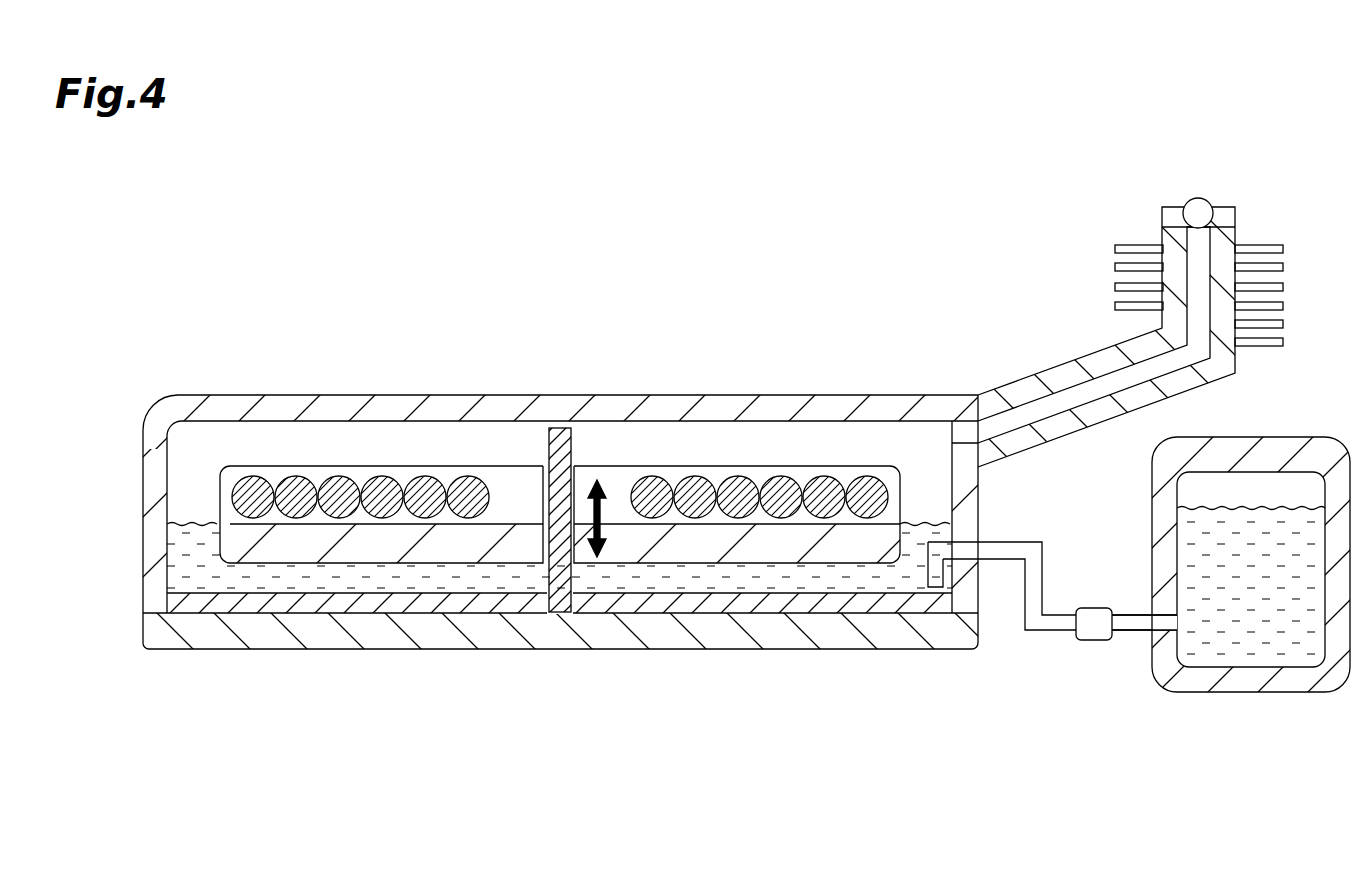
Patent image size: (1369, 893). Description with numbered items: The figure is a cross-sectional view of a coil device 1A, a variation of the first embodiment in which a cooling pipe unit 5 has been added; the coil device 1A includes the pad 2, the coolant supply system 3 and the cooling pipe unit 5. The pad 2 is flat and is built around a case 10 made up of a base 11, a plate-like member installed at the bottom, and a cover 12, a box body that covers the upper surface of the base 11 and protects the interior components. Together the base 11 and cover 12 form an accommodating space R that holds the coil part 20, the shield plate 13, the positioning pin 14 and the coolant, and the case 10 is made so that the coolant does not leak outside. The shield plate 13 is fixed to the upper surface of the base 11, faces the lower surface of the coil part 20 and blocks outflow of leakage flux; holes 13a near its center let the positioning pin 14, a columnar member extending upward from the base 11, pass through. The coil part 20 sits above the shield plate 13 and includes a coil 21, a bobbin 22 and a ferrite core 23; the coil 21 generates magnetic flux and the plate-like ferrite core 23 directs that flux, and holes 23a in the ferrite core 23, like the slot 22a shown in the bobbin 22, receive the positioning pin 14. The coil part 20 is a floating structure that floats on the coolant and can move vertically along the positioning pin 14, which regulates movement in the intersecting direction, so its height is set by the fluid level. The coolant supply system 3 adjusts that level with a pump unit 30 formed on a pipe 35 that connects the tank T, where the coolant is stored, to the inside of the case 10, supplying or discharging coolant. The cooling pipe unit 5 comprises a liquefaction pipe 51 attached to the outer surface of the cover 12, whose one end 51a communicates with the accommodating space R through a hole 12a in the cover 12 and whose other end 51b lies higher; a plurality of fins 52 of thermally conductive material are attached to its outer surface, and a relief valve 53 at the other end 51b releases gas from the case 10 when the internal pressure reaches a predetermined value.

The coil device 1A is at (886, 234).
The pad 2 is at (327, 390).
The case 10 is at (82, 547).
The base 11 is at (163, 632).
The cover 12 is at (155, 562).
The hole 12a is at (963, 440).
The shield plate 13 is at (862, 590).
The holes 13a is at (560, 603).
The positioning pin 14 is at (570, 583).
The coil part 20 is at (648, 330).
The coil 21 is at (468, 482).
The bobbin 22 is at (518, 482).
The slot of upper holder 22a is at (545, 487).
The ferrite core 23 is at (627, 537).
The holes 23a is at (545, 547).
The accommodating space R is at (209, 455).
The coolant supply system 3 is at (1096, 601).
The pump unit 30 is at (1096, 641).
The pipe 35 is at (1035, 632).
The tank T is at (1263, 452).
The cooling pipe unit 5 is at (1266, 204).
The liquefaction pipe 51 is at (1078, 350).
The one end 51a is at (985, 403).
The other end 51b is at (1175, 237).
The fins 52 is at (1115, 267).
The relief valve 53 is at (1198, 197).